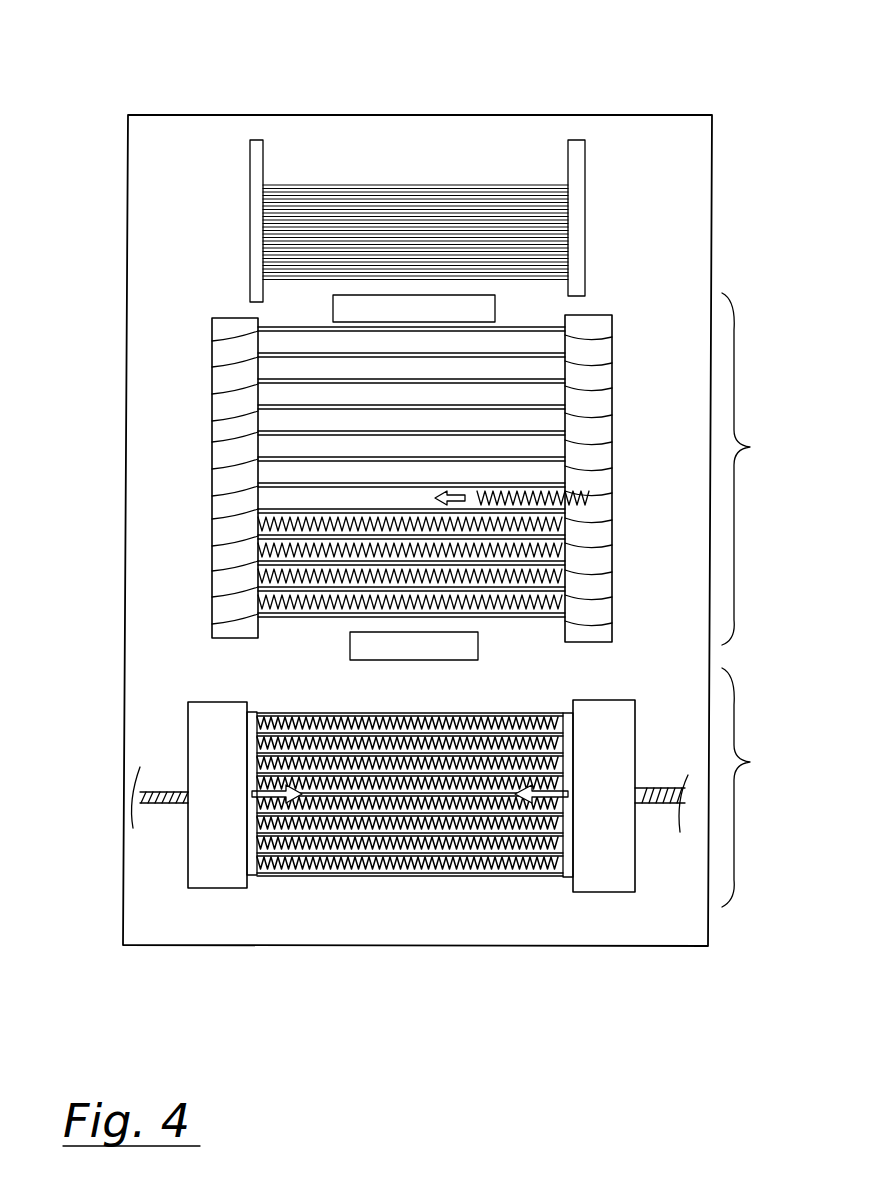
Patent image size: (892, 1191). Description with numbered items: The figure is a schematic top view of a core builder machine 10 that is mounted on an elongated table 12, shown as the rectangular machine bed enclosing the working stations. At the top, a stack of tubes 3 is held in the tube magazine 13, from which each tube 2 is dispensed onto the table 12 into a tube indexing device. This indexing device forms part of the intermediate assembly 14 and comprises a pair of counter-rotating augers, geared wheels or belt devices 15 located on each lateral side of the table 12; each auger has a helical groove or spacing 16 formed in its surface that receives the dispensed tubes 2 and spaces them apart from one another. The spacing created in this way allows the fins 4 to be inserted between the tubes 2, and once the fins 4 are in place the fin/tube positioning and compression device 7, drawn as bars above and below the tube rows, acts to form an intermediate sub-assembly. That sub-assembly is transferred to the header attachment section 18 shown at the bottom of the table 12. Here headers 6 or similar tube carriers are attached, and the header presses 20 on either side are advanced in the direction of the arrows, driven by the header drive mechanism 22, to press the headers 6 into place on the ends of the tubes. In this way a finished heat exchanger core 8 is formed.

The core builder machine 10 is at (96, 106).
The table 12 is at (128, 225).
The tube magazine 13 is at (587, 180).
The tube stack 3 is at (435, 183).
The fin/tube compression device 7 is at (495, 305).
The intermediate assembly 14 is at (481, 450).
The tubes 2 is at (275, 328).
The fins 4 is at (590, 498).
The pair of counter-rotating augers, geared wheels or belt devices 15 is at (212, 355).
The helical groove or spacing 16 is at (223, 387).
The header attachment 18 is at (422, 868).
The heat exchanger core 8 is at (424, 913).
The headers or tube carriers or similar 6 is at (253, 880).
The header press tooling 20 is at (210, 893).
The header drive mechanism 22 is at (163, 790).